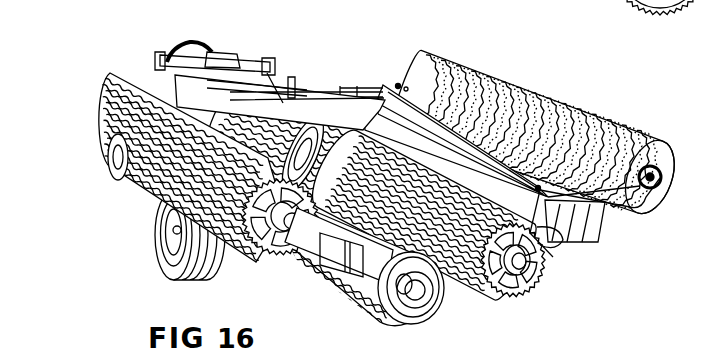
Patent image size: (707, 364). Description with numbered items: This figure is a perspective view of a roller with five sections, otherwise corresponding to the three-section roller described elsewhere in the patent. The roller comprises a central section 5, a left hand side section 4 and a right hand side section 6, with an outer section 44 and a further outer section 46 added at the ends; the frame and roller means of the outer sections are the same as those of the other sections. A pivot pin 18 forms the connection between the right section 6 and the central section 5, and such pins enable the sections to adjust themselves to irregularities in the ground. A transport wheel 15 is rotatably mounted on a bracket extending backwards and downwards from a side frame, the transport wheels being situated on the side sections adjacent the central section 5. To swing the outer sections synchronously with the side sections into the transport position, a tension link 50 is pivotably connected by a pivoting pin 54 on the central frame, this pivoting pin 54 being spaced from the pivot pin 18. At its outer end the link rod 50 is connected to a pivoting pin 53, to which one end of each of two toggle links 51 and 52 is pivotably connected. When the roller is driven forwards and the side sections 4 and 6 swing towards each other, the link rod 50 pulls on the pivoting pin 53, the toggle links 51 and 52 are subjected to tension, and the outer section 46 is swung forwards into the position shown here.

The left hand side section 4 is at (430, 316).
The central section 5 is at (128, 192).
The right hand side section 6 is at (507, 302).
The transport wheel 15 is at (170, 270).
The pivot pin 18 is at (383, 87).
The outer section 44 is at (104, 84).
The outer section 46 is at (529, 80).
The tension link 50 is at (406, 88).
The toggle link 51 is at (560, 196).
The toggle link 52 is at (548, 196).
The pivoting pin 53 is at (538, 192).
The pivoting pin 54 is at (398, 86).